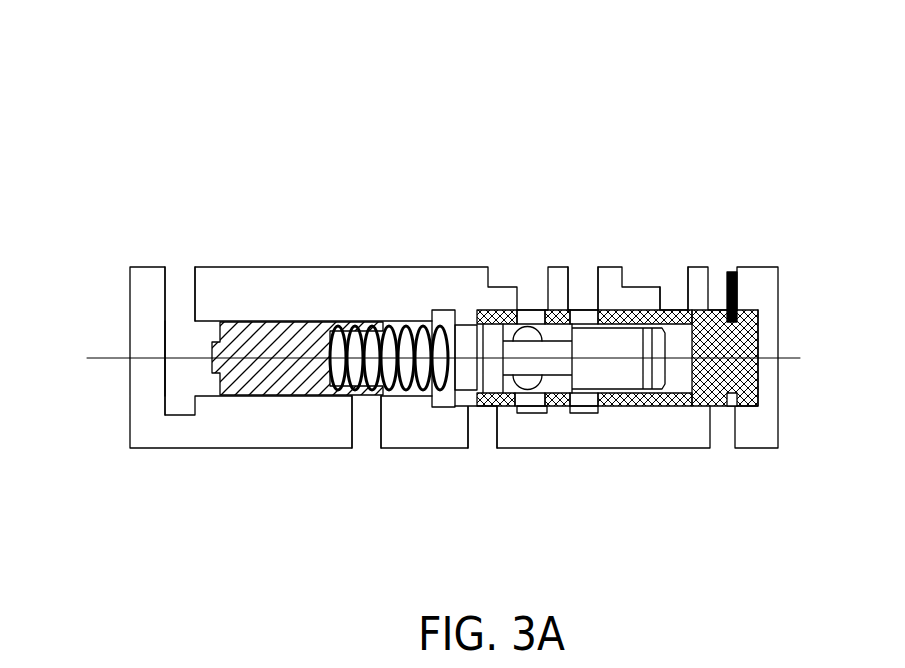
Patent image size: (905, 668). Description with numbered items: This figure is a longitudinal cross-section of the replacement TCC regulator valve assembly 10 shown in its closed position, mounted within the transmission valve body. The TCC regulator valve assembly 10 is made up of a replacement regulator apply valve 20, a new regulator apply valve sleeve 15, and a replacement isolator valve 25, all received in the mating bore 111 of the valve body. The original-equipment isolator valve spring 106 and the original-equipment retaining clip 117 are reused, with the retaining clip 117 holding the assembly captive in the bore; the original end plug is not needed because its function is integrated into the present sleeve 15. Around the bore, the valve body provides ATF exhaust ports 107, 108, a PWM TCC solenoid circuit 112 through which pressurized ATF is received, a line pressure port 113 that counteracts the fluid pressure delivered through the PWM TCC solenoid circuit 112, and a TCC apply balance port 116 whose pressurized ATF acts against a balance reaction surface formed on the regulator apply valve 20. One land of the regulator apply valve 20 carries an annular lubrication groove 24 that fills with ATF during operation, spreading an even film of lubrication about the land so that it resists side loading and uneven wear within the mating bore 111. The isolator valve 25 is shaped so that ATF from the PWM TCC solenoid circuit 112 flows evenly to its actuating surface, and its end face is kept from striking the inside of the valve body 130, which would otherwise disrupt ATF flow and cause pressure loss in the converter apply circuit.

The TCC regulator valve assembly 10 is at (419, 272).
The regulator apply valve sleeve 15 is at (636, 407).
The regulator apply valve 20 is at (556, 376).
The lubrication groove 24 is at (478, 338).
The isolator valve 25 is at (293, 397).
The isolator valve spring 106 is at (405, 323).
The ATF exhaust port 107 is at (370, 432).
The ATF exhaust port 108 is at (483, 433).
The mating bore 111 is at (203, 390).
The PWM TCC solenoid circuit 112 is at (180, 300).
The line pressure port 113 is at (585, 288).
The TCC apply balance port 116 is at (675, 288).
The retaining clip 117 is at (730, 272).
The inside of the valve body 130 is at (162, 338).